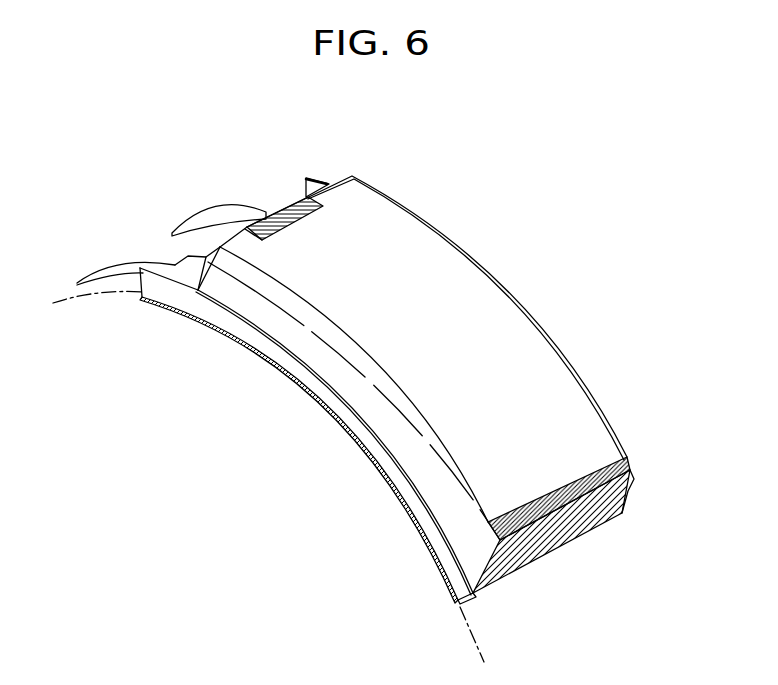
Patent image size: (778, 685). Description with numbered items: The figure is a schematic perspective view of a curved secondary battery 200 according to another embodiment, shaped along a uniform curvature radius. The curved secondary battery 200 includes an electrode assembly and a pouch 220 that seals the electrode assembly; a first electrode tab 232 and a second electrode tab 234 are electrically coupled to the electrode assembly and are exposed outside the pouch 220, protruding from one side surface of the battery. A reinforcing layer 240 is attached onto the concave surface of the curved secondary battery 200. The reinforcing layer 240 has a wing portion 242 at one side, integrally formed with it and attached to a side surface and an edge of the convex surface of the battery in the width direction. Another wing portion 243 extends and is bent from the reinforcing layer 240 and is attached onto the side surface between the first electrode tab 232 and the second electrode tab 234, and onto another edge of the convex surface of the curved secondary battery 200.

The curved secondary battery 200 is at (690, 175).
The pouch 220 is at (489, 298).
The first electrode tab 232 is at (184, 222).
The second electrode tab 234 is at (90, 270).
The reinforcing layer 240 is at (413, 522).
The wing portion 242 is at (560, 543).
The another wing portion 243 is at (278, 210).